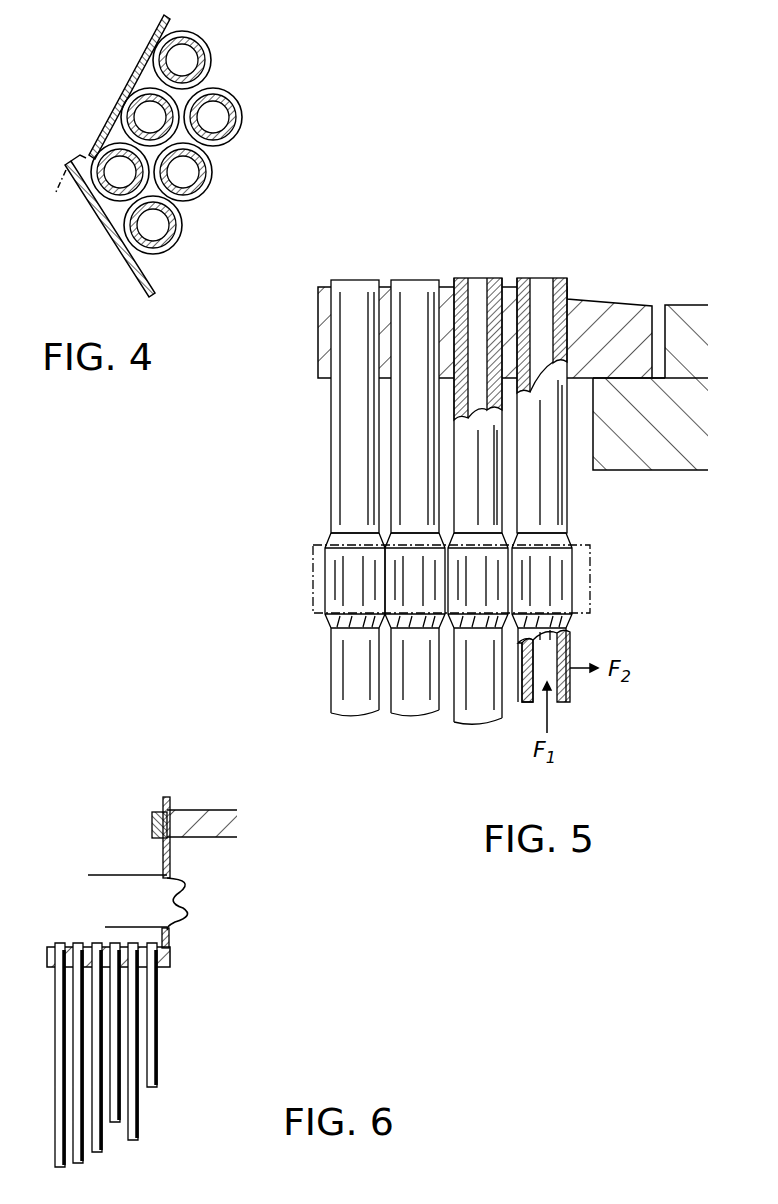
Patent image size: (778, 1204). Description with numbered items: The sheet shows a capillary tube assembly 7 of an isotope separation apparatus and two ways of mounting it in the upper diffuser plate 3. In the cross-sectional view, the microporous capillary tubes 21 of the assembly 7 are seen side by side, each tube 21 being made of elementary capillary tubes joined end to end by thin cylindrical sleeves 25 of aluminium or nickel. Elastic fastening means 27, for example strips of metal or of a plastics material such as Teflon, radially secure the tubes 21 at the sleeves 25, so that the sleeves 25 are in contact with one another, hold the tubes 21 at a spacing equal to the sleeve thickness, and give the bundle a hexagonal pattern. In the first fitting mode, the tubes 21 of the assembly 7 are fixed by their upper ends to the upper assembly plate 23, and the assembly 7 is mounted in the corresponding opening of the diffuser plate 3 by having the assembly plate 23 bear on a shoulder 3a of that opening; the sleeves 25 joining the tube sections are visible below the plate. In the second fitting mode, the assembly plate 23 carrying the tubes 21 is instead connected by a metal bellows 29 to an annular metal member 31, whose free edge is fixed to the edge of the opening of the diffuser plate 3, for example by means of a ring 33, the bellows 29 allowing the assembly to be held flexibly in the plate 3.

In FIG. 5, the upper diffuser plate 3 is at (677, 327).
In FIG. 6, the upper diffuser plate 3 is at (207, 820).
In FIG. 5, the shoulder 3a is at (598, 374).
In FIG. 5, the assembly 7 is at (300, 452).
In FIG. 4, the microporous capillary tubes 21 is at (107, 218).
In FIG. 5, the microporous capillary tubes 21 is at (484, 517).
In FIG. 6, the microporous capillary tubes 21 is at (135, 1063).
In FIG. 5, the upper assembly plate 23 is at (600, 317).
In FIG. 6, the upper assembly plate 23 is at (170, 961).
In FIG. 4, the cylindrical sleeves 25 is at (222, 86).
In FIG. 5, the cylindrical sleeves 25 is at (390, 572).
In FIG. 4, the elastic fastening means 27 is at (113, 107).
In FIG. 6, the metal bellows 29 is at (190, 898).
In FIG. 6, the annular metal member 31 is at (172, 855).
In FIG. 6, the ring 33 is at (152, 822).